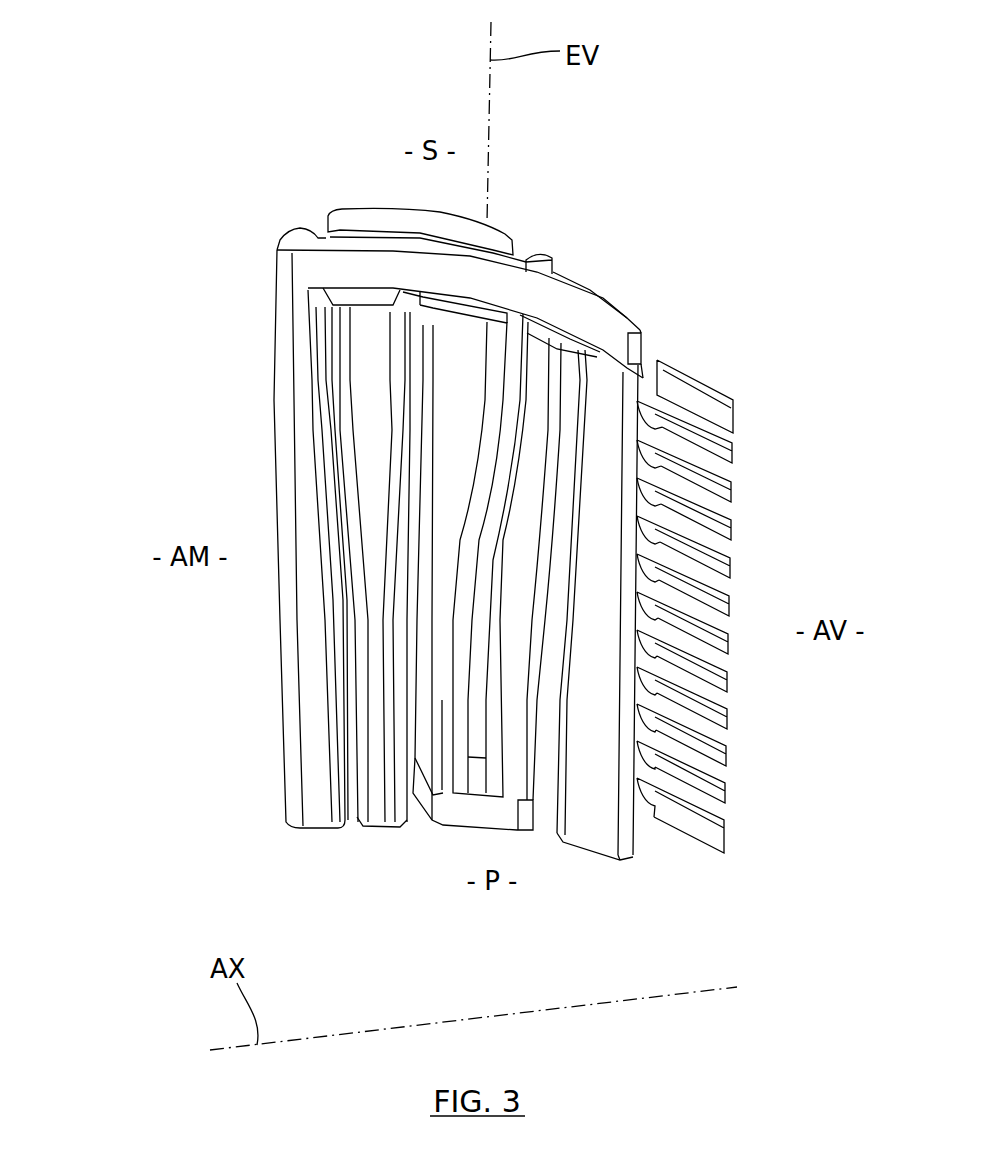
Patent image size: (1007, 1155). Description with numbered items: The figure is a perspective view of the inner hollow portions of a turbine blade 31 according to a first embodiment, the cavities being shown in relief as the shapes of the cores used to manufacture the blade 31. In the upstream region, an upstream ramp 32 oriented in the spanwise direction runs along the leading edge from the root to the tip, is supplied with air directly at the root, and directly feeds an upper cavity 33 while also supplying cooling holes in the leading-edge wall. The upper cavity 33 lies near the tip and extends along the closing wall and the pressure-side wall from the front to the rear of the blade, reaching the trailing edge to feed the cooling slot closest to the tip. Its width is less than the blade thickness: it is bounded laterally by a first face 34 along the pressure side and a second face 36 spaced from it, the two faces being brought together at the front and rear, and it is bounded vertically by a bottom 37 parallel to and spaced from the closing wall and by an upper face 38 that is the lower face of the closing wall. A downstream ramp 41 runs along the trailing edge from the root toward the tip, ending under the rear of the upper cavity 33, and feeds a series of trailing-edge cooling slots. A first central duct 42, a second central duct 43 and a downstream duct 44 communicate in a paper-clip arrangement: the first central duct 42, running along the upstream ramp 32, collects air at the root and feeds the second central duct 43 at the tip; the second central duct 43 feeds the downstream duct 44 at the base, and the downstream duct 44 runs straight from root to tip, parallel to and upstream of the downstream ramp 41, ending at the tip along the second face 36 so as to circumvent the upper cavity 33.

The blade 31 is at (160, 240).
The upstream ramp 32 is at (290, 472).
The upper cavity 33 is at (600, 258).
The first face 34 is at (628, 358).
The second face 36 is at (623, 318).
The bottom 37 is at (597, 348).
The upper face 38 is at (570, 292).
The downstream ramp 41 is at (607, 457).
The first central duct 42 is at (390, 704).
The second central duct 43 is at (450, 608).
The downstream duct 44 is at (550, 473).